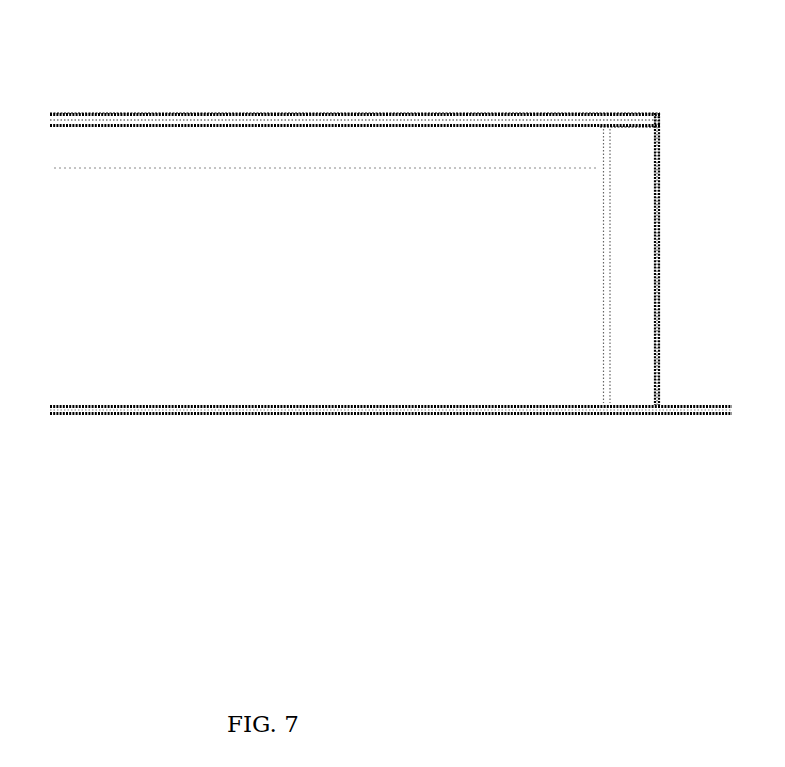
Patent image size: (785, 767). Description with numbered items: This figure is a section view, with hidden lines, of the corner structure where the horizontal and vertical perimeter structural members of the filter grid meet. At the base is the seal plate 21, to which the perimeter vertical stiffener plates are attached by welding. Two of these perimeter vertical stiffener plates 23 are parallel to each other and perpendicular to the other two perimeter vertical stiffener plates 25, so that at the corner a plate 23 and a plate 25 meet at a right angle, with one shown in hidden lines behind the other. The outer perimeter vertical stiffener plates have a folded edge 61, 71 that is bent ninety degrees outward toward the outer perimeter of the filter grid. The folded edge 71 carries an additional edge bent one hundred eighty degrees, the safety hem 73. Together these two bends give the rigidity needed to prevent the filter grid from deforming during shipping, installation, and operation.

The seal plate 21 is at (288, 415).
The perimeter vertical stiffener plate 23 is at (282, 148).
The perimeter vertical stiffener plate 25 is at (607, 293).
The folded edge 61 is at (552, 112).
The folded edge 71 is at (659, 113).
The safety hem 73 is at (638, 127).